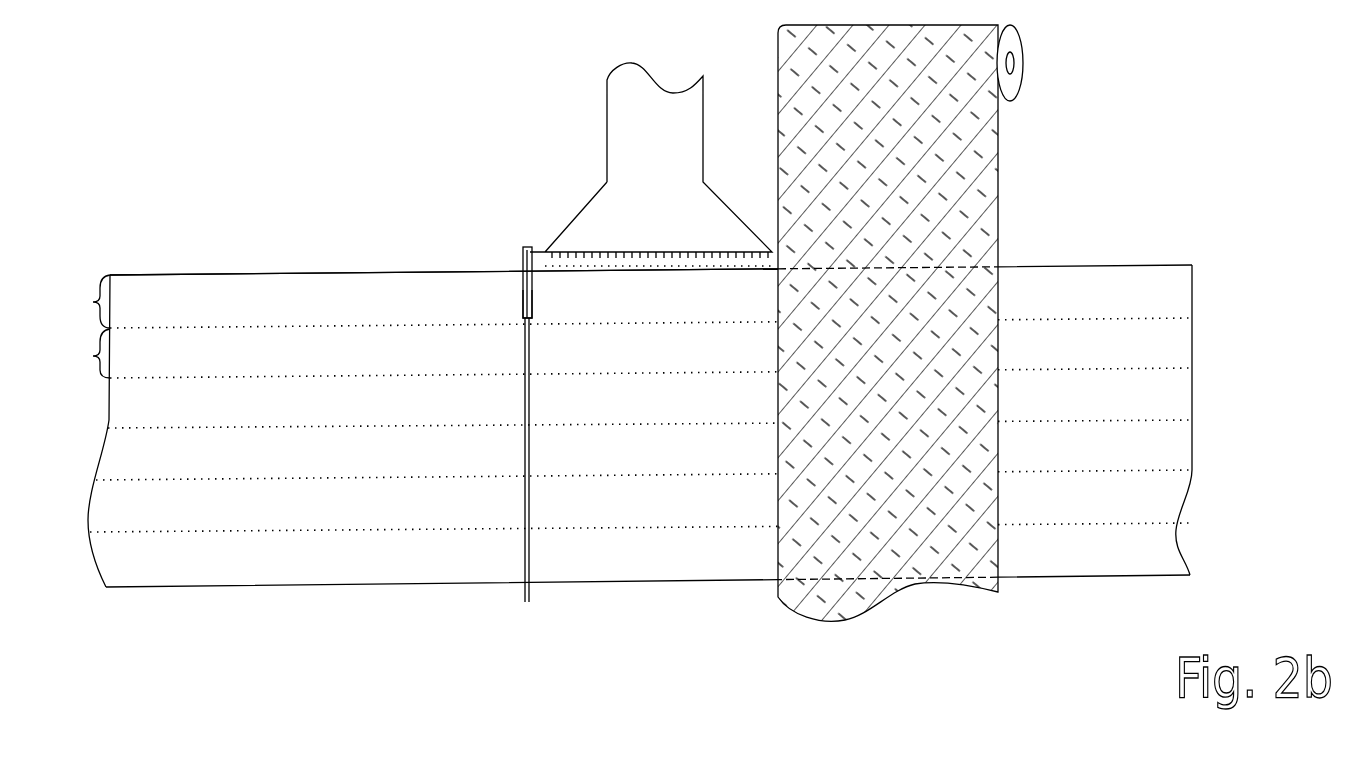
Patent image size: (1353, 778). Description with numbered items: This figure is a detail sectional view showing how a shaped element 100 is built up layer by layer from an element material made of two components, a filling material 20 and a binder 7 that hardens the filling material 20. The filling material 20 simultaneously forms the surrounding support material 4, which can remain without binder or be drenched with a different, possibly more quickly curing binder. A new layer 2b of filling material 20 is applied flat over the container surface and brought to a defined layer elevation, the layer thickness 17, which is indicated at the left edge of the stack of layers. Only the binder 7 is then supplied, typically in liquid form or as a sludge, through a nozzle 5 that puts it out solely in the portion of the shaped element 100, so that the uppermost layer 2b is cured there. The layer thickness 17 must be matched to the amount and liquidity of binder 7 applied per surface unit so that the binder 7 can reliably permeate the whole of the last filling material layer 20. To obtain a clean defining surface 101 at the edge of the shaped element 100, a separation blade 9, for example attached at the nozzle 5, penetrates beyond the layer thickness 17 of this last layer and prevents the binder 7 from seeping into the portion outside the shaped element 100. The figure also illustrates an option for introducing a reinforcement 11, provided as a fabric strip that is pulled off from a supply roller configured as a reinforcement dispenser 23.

The layer 2b is at (444, 295).
The support material 4 is at (640, 453).
The nozzle 5 is at (651, 164).
The binder 7 is at (522, 268).
The separation blade 9 is at (521, 292).
The reinforcement 11 is at (950, 220).
The layer thickness 17 is at (88, 326).
The filling material 20 is at (641, 425).
The reinforcement dispenser 23 is at (1018, 63).
The shaped element 100 is at (939, 344).
The defining surface 101 is at (527, 606).